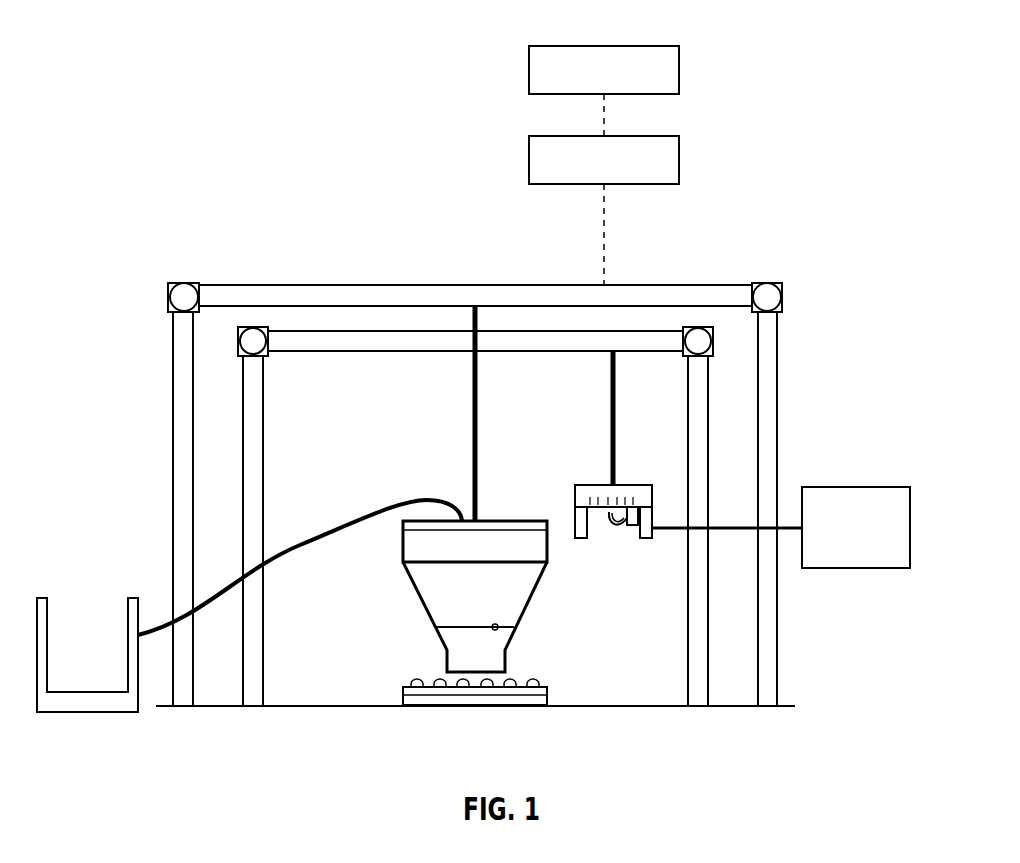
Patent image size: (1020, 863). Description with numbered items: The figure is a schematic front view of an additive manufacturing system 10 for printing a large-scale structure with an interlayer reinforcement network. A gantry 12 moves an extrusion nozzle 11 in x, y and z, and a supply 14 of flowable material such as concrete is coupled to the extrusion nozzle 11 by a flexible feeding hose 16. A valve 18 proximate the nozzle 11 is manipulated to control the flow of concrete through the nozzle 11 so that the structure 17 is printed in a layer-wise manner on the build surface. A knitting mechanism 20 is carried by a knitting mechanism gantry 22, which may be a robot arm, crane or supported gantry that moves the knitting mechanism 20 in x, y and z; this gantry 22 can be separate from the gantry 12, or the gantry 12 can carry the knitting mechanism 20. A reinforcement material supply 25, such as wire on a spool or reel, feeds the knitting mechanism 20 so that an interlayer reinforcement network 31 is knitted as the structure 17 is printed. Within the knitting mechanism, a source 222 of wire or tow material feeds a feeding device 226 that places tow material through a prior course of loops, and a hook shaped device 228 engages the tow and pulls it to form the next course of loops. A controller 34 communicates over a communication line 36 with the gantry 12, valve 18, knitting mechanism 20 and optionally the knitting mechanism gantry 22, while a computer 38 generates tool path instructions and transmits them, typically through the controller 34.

The additive manufacturing system 10 is at (207, 196).
The extrusion nozzle 11 is at (425, 605).
The gantry 12 is at (645, 328).
The supply of flowable material 14 is at (88, 712).
The flexible feeding hose 16 is at (352, 522).
The structure 17 is at (400, 693).
The valve 18 is at (497, 625).
The knitting mechanism 20 is at (697, 393).
The knitting mechanism gantry 22 is at (661, 497).
The reinforcement material supply 25 is at (857, 487).
The interlayer reinforcement network 31 is at (540, 680).
The controller 34 is at (627, 46).
The communication line 36 is at (602, 233).
The computer 38 is at (627, 136).
The source of wire or tow material 222 is at (573, 513).
The feeding device 226 is at (647, 537).
The hook shaped device 228 is at (595, 552).